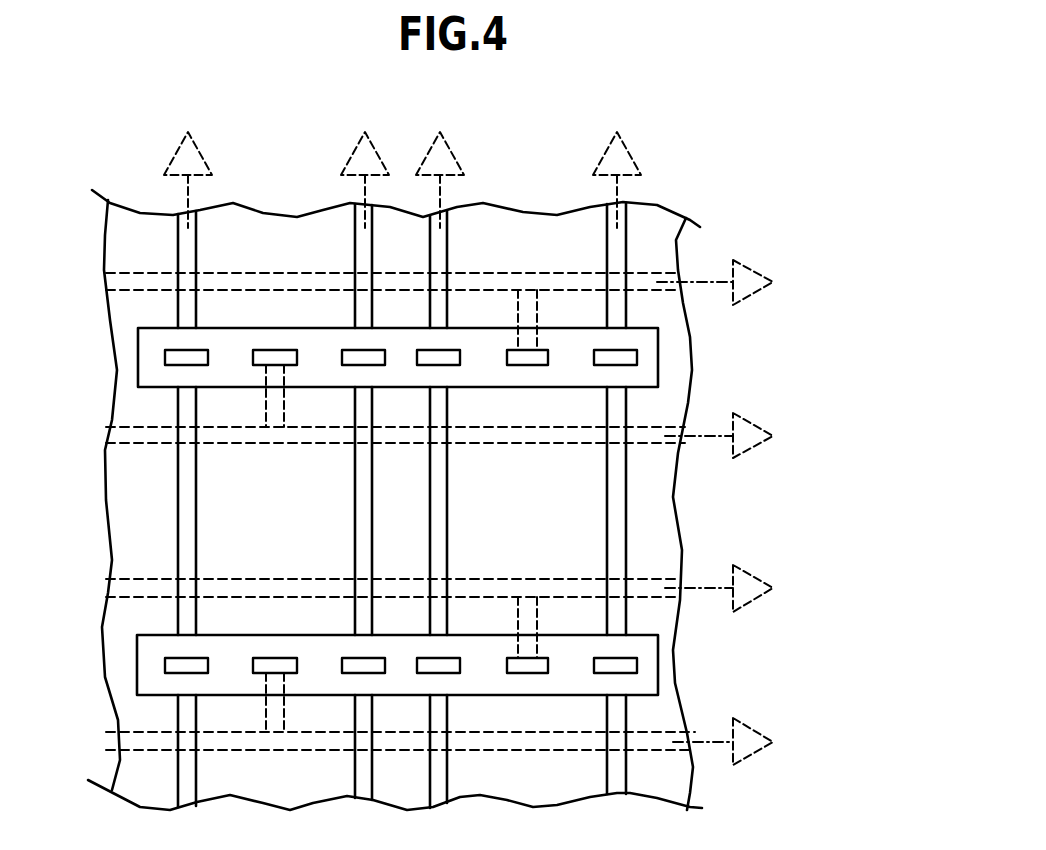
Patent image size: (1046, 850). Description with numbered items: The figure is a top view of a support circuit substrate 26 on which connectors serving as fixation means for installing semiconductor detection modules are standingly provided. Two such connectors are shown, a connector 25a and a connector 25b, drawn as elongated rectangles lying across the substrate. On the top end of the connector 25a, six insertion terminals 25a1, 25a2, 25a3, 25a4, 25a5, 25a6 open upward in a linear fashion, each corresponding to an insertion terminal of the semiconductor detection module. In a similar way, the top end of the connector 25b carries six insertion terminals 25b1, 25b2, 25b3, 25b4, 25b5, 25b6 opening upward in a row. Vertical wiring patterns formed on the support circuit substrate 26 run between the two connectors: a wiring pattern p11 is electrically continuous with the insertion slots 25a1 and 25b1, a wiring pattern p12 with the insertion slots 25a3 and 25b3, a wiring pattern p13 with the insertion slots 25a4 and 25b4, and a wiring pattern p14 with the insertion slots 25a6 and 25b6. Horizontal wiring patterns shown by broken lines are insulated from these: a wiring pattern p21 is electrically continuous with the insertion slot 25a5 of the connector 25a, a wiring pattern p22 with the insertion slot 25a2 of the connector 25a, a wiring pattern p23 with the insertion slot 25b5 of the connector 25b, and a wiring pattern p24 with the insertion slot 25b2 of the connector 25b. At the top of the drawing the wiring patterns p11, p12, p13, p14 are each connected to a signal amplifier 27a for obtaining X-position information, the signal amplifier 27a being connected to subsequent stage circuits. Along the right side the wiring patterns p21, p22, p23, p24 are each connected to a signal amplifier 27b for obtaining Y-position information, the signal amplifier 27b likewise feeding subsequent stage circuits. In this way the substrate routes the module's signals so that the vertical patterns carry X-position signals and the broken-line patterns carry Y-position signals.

The support circuit substrate 26 is at (653, 230).
The signal amplifier 27a is at (198, 140).
The signal amplifier 27b is at (773, 282).
The wiring pattern p11 is at (178, 235).
The wiring pattern p12 is at (355, 235).
The wiring pattern p13 is at (448, 235).
The wiring pattern p14 is at (607, 235).
The wiring pattern p21 is at (642, 283).
The wiring pattern p22 is at (642, 438).
The wiring pattern p23 is at (642, 590).
The wiring pattern p24 is at (642, 740).
The connector 25a is at (658, 380).
The insertion terminal 25a1 is at (170, 352).
The insertion terminal 25a2 is at (264, 350).
The insertion terminal 25a3 is at (357, 350).
The insertion terminal 25a4 is at (450, 350).
The insertion terminal 25a5 is at (542, 350).
The insertion terminal 25a6 is at (633, 352).
The connector 25b is at (658, 687).
The insertion terminal 25b1 is at (170, 660).
The insertion terminal 25b2 is at (265, 658).
The insertion terminal 25b3 is at (352, 658).
The insertion terminal 25b4 is at (450, 658).
The insertion terminal 25b5 is at (542, 658).
The insertion terminal 25b6 is at (633, 660).